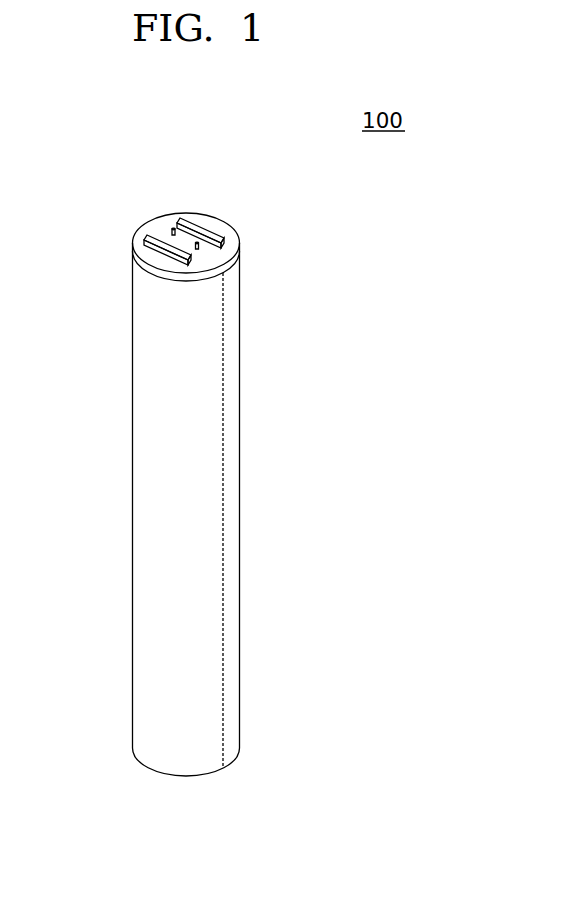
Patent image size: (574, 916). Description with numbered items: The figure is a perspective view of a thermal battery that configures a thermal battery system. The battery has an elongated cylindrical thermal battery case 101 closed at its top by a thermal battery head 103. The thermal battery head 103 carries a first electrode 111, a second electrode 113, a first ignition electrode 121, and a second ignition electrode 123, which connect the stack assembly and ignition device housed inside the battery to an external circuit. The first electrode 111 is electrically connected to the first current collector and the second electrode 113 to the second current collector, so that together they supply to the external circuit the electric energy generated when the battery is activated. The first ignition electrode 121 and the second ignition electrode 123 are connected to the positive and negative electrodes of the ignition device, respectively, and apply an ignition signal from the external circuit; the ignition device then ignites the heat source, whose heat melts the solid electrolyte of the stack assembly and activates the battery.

The thermal battery case 101 is at (227, 458).
The thermal battery head 103 is at (234, 264).
The first electrode 111 is at (226, 236).
The second electrode 113 is at (150, 239).
The first ignition electrode 121 is at (173, 229).
The second ignition electrode 123 is at (198, 244).